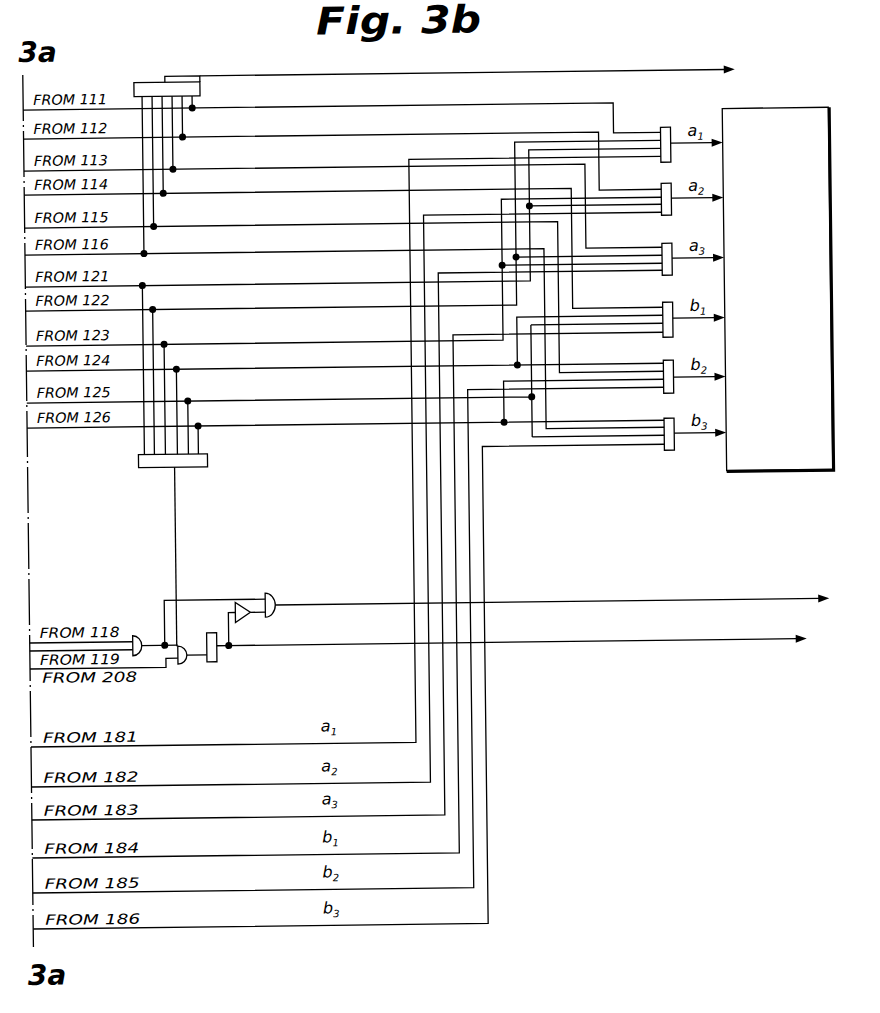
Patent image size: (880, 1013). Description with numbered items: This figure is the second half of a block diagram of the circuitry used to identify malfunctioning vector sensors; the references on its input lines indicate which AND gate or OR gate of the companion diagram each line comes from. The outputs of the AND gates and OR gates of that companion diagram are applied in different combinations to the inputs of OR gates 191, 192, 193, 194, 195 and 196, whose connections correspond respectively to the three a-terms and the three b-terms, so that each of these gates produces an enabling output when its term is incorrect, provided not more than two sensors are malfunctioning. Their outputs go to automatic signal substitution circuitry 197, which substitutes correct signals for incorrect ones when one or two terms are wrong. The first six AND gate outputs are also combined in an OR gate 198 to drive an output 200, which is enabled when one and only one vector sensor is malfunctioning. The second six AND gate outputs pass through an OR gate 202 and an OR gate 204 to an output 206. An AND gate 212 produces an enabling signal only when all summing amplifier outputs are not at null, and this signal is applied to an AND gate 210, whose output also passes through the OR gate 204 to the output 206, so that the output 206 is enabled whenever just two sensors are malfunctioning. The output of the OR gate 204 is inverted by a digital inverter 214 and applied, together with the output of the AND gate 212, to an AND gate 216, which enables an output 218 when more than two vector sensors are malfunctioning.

The OR gate 191 is at (669, 130).
The OR gate 192 is at (668, 188).
The OR gate 193 is at (665, 248).
The OR gate 194 is at (665, 307).
The OR gate 195 is at (665, 367).
The OR gate 196 is at (665, 425).
The automatic signal substitution circuitry 197 is at (772, 474).
The OR gate 198 is at (190, 77).
The output 200 is at (307, 73).
The OR gate 202 is at (208, 458).
The OR gate 204 is at (216, 658).
The output 206 is at (390, 644).
The AND gate 210 is at (191, 664).
The AND gate 212 is at (150, 612).
The digital inverter 214 is at (252, 615).
The AND gate 216 is at (274, 591).
The output 218 is at (648, 603).